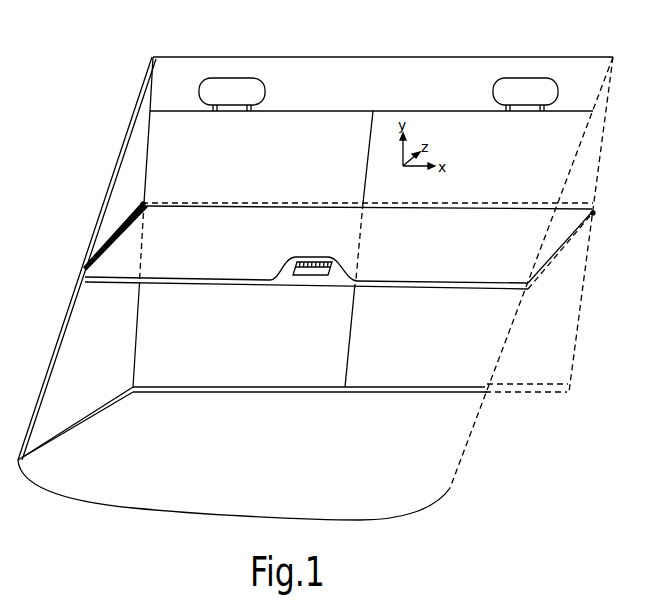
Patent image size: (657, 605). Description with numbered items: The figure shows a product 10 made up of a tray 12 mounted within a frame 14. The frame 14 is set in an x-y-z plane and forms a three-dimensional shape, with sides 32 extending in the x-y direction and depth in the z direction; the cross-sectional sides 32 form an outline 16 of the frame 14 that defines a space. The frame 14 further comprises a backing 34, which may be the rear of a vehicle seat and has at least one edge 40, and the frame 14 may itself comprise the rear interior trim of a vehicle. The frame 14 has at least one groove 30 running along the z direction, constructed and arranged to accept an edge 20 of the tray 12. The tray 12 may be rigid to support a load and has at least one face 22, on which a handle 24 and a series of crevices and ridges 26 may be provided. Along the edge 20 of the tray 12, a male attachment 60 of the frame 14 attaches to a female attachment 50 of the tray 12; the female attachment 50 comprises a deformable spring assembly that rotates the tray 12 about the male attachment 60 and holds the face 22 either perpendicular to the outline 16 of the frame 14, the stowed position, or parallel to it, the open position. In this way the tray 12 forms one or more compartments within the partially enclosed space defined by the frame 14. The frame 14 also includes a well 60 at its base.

The product 10 is at (534, 56).
The tray 12 is at (388, 275).
The frame 14 is at (512, 326).
The outline 16 is at (501, 352).
The edge 20 is at (85, 267).
The face 22 is at (204, 272).
The handle 24 is at (284, 273).
The crevices and ridges 26 is at (472, 220).
The groove 30 is at (108, 234).
The side 32 is at (365, 57).
The backing 34 is at (578, 346).
The edge 40 is at (146, 180).
The female attachment 50 is at (144, 203).
The male attachment 60 is at (143, 204).